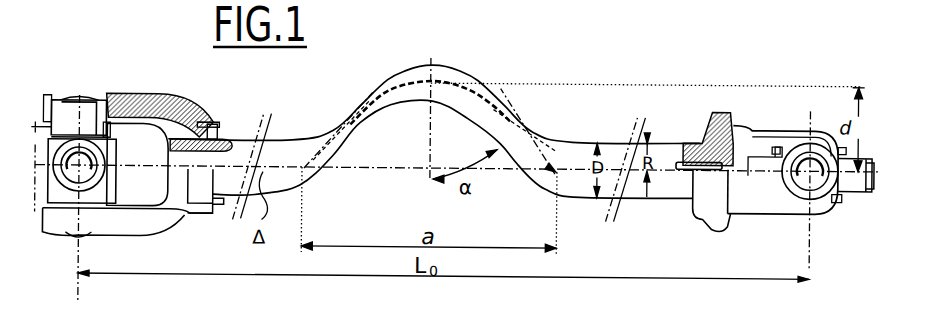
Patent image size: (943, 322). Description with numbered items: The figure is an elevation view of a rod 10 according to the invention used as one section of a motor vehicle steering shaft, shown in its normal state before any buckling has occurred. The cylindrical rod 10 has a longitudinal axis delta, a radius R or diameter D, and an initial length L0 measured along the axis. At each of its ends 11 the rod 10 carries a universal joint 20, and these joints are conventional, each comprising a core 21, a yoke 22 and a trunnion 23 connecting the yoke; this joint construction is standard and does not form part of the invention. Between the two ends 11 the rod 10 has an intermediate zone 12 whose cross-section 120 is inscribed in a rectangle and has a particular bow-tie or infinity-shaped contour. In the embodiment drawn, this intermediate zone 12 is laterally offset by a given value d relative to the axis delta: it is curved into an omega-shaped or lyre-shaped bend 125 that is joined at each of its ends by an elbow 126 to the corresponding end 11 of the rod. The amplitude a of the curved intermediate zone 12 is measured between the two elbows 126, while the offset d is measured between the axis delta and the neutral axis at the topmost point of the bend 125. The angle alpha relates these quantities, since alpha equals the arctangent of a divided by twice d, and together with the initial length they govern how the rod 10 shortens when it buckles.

The rod 10 is at (561, 69).
The ends 11 is at (198, 155).
The intermediate zone 12 is at (387, 68).
The universal joint 20 is at (165, 34).
The core 21 is at (200, 118).
The yoke 22 is at (118, 96).
The trunnion 23 is at (78, 117).
The cross-section 120 is at (433, 63).
The bend 125 is at (410, 100).
The elbow 126 is at (312, 147).